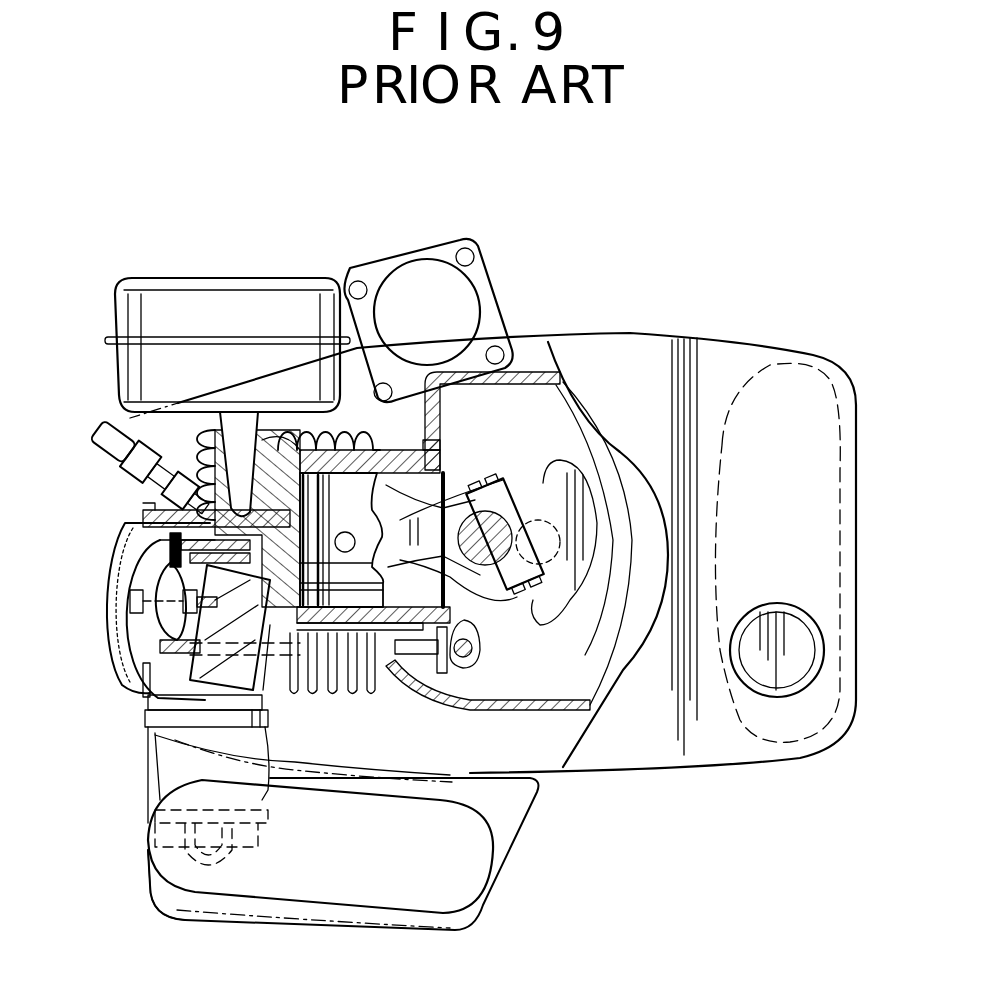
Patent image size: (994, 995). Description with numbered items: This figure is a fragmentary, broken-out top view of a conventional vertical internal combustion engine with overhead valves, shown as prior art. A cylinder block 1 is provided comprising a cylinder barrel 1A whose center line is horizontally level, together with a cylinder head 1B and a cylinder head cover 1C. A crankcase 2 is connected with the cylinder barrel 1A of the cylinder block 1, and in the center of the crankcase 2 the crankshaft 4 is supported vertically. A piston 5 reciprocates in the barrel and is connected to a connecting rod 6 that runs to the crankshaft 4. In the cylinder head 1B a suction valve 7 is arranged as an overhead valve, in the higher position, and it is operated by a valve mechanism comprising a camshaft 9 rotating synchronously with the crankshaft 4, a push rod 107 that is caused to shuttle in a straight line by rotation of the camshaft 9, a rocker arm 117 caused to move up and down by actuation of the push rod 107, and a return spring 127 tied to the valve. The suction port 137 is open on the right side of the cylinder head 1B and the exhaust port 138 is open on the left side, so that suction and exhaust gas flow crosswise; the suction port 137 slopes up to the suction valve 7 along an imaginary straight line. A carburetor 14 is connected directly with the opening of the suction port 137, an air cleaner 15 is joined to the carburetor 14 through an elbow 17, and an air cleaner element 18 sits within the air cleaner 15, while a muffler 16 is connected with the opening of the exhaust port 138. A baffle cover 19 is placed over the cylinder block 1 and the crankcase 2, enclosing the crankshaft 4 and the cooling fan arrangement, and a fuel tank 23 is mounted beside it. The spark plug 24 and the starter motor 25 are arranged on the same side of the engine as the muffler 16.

The cylinder block 1 is at (382, 685).
The cylinder barrel 1A is at (320, 442).
The cylinder head 1B is at (272, 440).
The cylinder head cover 1C is at (110, 560).
The crankcase 2 is at (543, 712).
The crankshaft 4 is at (544, 520).
The piston 5 is at (372, 488).
The connecting rod 6 is at (447, 525).
The suction valve 7 is at (168, 580).
The camshaft 9 is at (480, 650).
The carburetor 14 is at (160, 767).
The air cleaner 15 is at (503, 840).
The muffler 16 is at (155, 290).
The elbow 17 is at (180, 888).
The air cleaner element 18 is at (330, 880).
The baffle cover 19 is at (672, 348).
The fuel tank 23 is at (816, 378).
The spark plug 24 is at (122, 462).
The starter motor 25 is at (410, 278).
The push rod 107 is at (143, 688).
The rocker arm 117 is at (150, 625).
The return spring 127 is at (143, 526).
The suction port 137 is at (252, 672).
The exhaust port 138 is at (226, 440).